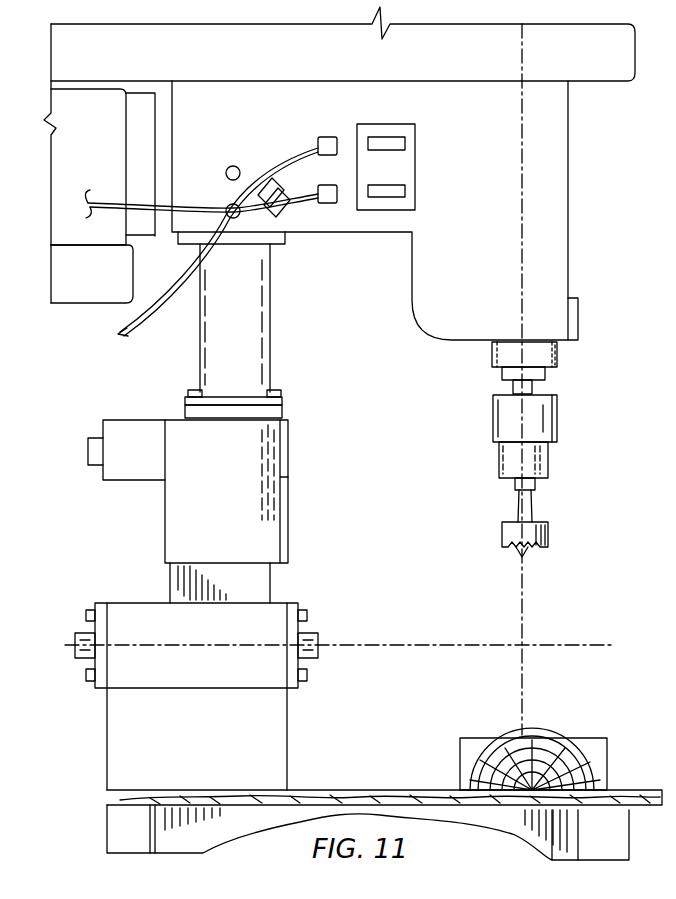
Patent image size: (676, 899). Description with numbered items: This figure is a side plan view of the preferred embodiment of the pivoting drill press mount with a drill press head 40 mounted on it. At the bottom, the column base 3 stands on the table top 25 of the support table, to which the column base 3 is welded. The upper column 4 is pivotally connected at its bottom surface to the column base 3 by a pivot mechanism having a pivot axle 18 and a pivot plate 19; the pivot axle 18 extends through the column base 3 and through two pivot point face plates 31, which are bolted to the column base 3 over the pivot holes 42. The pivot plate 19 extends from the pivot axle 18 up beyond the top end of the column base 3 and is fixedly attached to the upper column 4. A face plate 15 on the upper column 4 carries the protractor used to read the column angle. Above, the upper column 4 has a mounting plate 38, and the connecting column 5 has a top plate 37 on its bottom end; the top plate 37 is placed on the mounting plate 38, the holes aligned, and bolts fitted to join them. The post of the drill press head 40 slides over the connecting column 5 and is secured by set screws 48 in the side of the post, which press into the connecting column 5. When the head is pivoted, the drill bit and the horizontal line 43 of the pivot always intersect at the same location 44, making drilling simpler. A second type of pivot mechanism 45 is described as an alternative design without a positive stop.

The column base 3 is at (223, 738).
The upper column 4 is at (229, 491).
The connecting column 5 is at (268, 345).
The face plate 15 is at (290, 520).
The pivot axle 18 is at (318, 650).
The pivot plate 19 is at (254, 583).
The table top 25 is at (420, 792).
The pivot point face plate 31 is at (305, 625).
The top plate 37 is at (283, 400).
The mounting plate 38 is at (283, 412).
The drill press head 40 is at (556, 143).
The pivot hole 42 is at (105, 171).
The horizontal line 43 is at (512, 390).
The intersection location 44 is at (556, 415).
The second type of pivot mechanism 45 is at (547, 462).
The set screws 48 is at (233, 165).